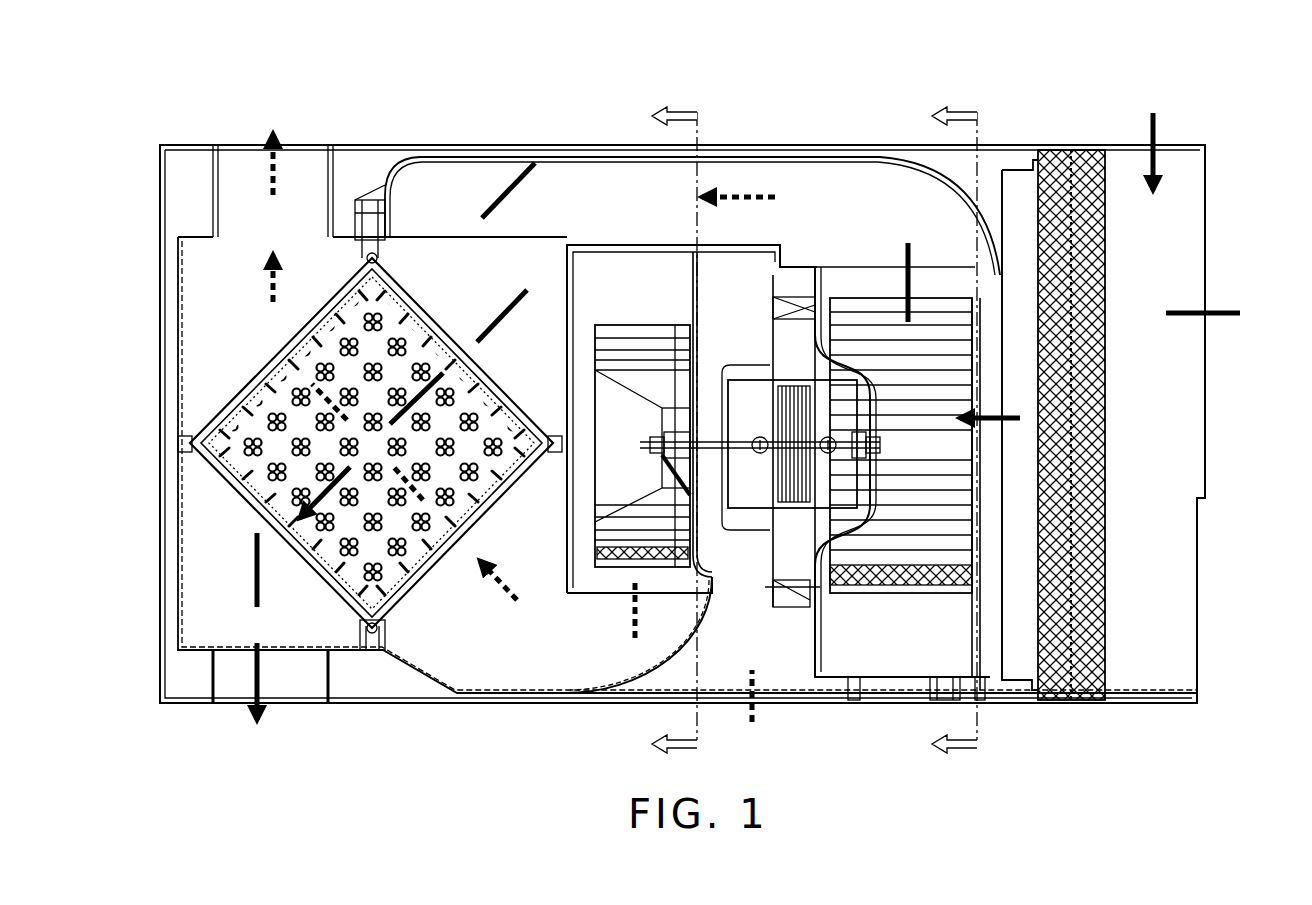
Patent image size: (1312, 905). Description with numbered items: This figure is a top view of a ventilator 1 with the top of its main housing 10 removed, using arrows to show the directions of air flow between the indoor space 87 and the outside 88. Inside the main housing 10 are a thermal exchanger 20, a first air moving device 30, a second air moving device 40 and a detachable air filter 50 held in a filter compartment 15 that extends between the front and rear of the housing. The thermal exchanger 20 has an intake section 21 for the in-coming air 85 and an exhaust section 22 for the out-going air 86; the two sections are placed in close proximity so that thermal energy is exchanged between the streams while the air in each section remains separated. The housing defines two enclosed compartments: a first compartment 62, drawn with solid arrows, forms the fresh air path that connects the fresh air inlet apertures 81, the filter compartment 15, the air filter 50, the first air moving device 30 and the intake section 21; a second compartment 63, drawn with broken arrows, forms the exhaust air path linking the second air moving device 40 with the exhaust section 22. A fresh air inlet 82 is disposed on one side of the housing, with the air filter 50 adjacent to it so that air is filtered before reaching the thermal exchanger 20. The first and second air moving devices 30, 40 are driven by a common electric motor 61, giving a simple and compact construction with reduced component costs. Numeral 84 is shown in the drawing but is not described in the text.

The ventilator 1 is at (1245, 102).
The main housing 10 is at (160, 180).
The filter compartment 15 is at (1105, 140).
The thermal exchanger 20 is at (268, 424).
The intake section 21 is at (436, 305).
The exhaust section 22 is at (270, 343).
The first air moving device 30 is at (868, 592).
The second air moving device 40 is at (645, 345).
The air filter 50 is at (1115, 668).
The electric motor 61 is at (848, 421).
The first compartment 62 is at (870, 203).
The second compartment 63 is at (560, 646).
The fresh air inlet apertures 81 is at (1228, 380).
The fresh air inlet 82 is at (222, 717).
The indoor air inlet 84 is at (318, 140).
The in-coming air 85 is at (538, 171).
The out-going air 86 is at (266, 203).
The indoor space 87 is at (575, 767).
The outside 88 is at (625, 56).